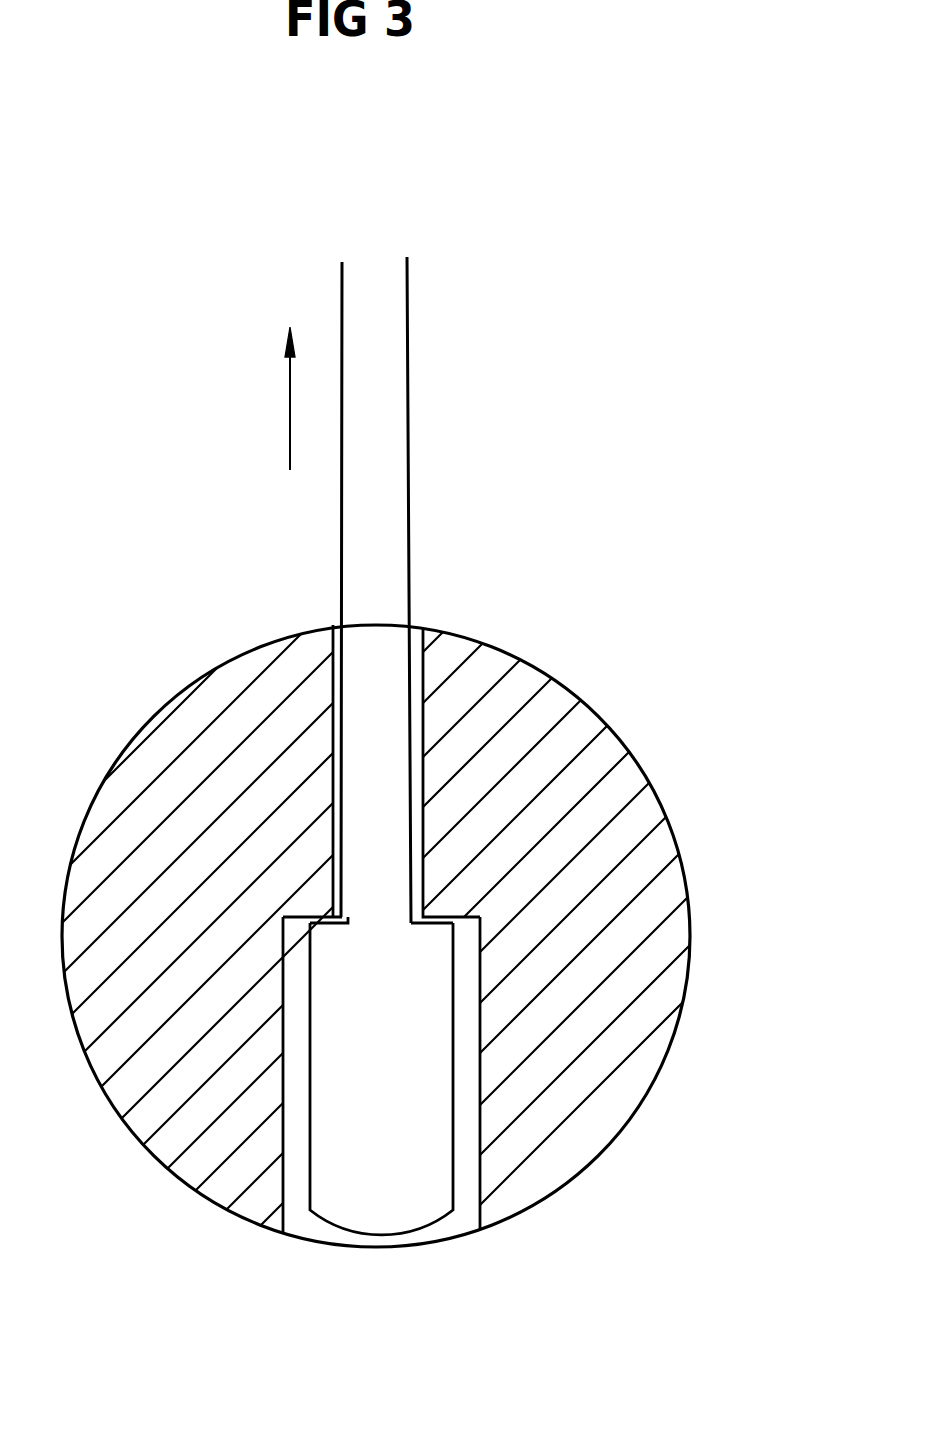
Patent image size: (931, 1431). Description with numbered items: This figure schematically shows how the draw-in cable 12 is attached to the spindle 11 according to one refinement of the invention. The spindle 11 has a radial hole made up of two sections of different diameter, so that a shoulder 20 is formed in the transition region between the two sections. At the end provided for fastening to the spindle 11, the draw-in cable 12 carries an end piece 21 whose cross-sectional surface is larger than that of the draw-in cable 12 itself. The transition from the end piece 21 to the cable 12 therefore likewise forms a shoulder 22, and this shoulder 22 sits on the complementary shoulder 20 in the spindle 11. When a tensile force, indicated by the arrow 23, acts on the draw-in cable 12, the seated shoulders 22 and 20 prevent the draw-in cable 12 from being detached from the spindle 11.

The spindle 11 is at (690, 900).
The draw-in cable 12 is at (408, 490).
The shoulder 20 is at (477, 865).
The end piece 21 is at (450, 1215).
The shoulder 22 is at (328, 925).
The arrow 23 is at (290, 430).